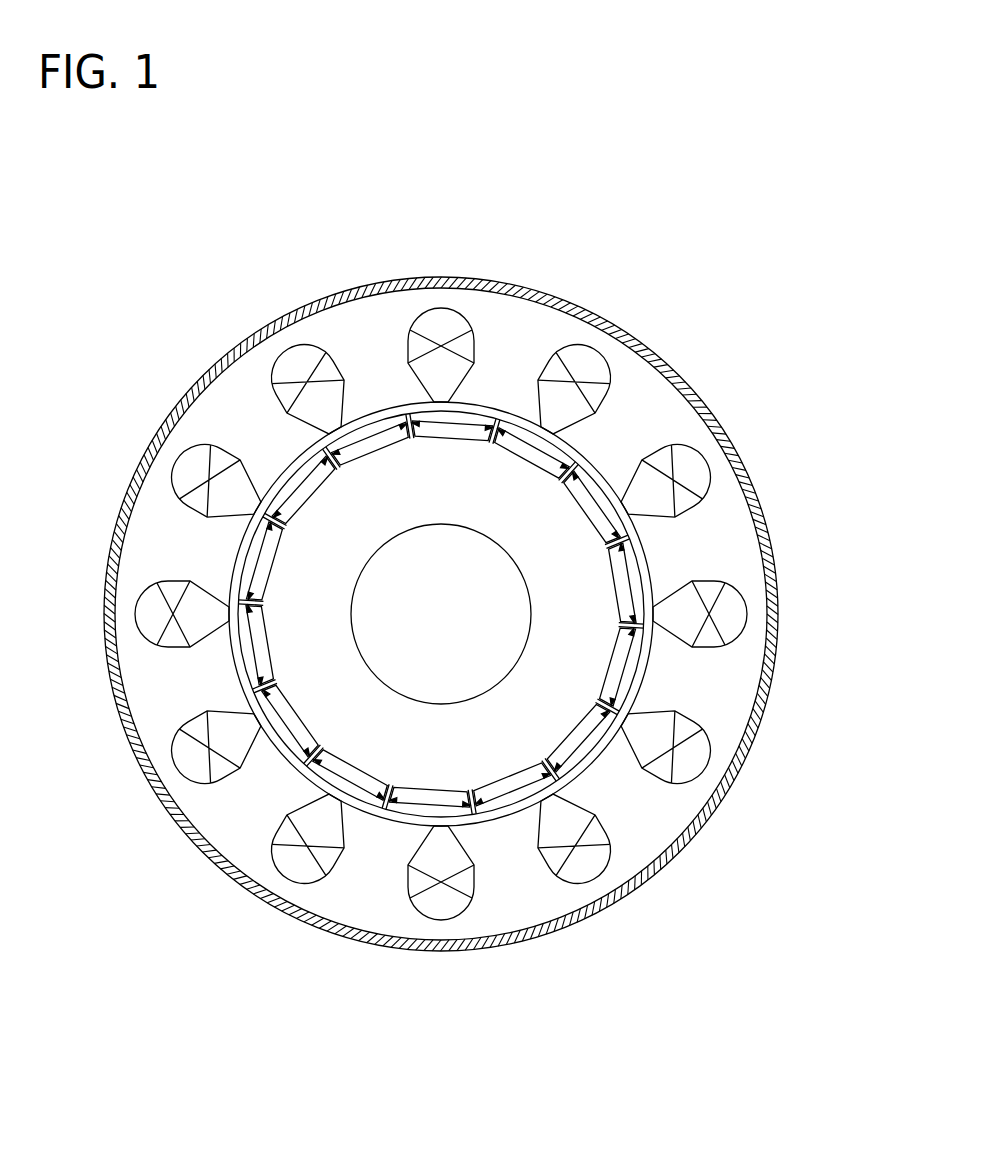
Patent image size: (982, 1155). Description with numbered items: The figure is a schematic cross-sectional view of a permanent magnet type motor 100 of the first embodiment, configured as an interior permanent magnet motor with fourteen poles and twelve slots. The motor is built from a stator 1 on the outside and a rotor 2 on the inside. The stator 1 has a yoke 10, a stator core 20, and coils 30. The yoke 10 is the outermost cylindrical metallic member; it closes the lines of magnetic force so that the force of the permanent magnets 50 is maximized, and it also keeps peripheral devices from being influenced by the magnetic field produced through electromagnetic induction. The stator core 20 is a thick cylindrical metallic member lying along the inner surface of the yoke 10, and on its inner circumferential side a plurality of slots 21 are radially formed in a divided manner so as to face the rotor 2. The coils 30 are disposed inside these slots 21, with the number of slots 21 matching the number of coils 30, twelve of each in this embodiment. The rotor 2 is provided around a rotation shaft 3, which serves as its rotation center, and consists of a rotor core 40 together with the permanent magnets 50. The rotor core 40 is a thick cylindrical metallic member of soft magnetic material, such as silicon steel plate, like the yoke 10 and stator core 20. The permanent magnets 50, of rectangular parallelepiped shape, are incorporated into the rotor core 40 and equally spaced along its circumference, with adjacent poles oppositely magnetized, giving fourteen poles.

The permanent magnet type motor 100 is at (132, 182).
The stator 1 is at (200, 380).
The yoke 10 is at (447, 280).
The stator core 20 is at (353, 330).
The slots 21 is at (690, 500).
The coils 30 is at (578, 365).
The rotor 2 is at (237, 573).
The rotation shaft 3 is at (449, 628).
The rotor core 40 is at (577, 672).
The permanent magnets 50 is at (603, 482).